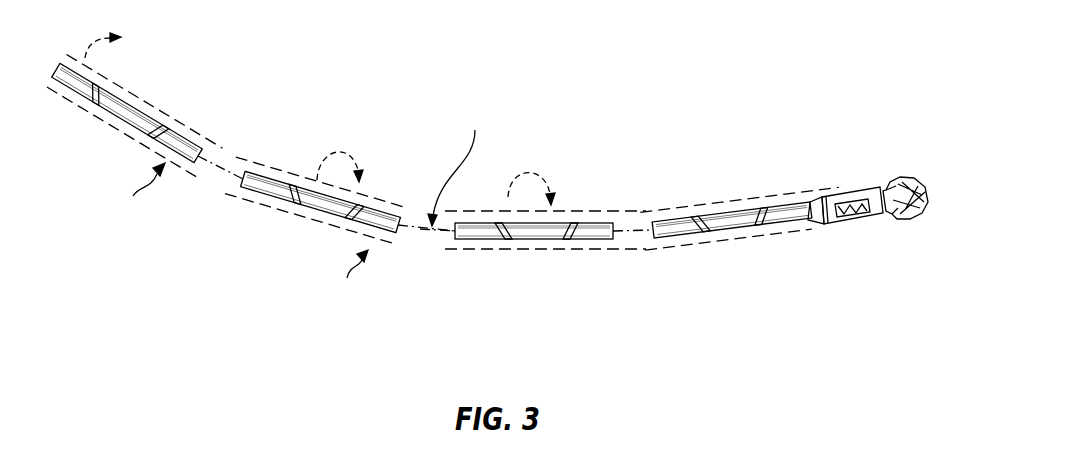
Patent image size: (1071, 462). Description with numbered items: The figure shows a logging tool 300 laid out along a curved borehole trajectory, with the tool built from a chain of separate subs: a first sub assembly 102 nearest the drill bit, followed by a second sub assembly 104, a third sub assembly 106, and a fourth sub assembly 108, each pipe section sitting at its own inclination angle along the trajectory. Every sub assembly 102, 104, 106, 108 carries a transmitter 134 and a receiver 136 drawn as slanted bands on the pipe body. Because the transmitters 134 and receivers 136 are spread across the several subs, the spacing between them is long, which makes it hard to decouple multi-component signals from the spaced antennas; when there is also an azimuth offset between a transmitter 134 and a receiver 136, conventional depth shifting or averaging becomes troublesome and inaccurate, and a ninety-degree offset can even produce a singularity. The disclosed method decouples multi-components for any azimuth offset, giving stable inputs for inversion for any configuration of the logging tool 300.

The logging tool 300 is at (853, 41).
The first sub assembly 102 is at (722, 215).
The second sub assembly 104 is at (600, 223).
The third sub assembly 106 is at (267, 170).
The fourth sub assembly 108 is at (133, 98).
The transmitter 134 is at (95, 103).
The receiver 136 is at (170, 127).